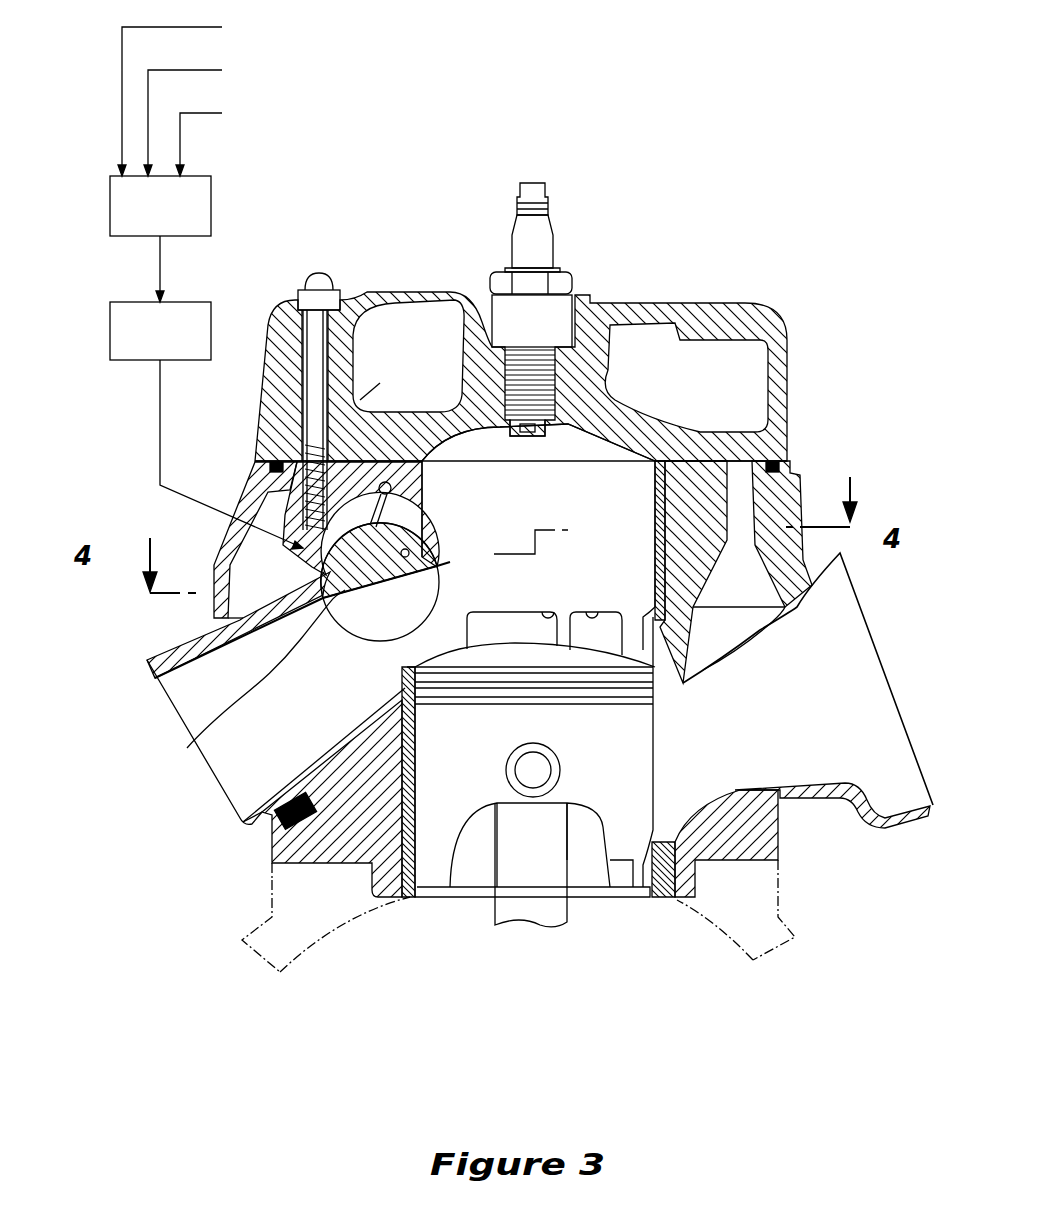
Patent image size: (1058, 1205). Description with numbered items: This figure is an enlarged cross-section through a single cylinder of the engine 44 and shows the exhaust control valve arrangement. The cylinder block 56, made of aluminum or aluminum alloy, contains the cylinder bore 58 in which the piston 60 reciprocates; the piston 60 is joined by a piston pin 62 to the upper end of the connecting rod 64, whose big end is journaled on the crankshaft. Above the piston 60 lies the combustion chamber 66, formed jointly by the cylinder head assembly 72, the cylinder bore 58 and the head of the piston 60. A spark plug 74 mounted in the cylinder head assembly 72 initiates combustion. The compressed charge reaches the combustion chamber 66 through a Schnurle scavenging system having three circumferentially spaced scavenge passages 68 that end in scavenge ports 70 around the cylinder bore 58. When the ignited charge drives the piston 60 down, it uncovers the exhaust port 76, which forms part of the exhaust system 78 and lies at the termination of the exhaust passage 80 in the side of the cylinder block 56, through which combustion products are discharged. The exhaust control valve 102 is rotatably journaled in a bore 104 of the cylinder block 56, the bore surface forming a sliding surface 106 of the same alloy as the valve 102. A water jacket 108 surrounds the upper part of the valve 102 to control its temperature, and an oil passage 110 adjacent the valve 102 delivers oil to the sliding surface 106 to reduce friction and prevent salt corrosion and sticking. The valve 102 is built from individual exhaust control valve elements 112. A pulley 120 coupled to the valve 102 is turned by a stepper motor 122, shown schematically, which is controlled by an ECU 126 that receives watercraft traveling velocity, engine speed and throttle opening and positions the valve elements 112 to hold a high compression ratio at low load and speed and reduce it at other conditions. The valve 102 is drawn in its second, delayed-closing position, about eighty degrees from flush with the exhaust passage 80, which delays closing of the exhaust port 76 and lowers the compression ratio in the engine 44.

The engine 44 is at (806, 262).
The cylinder block 56 is at (777, 503).
The cylinder bore 58 is at (655, 487).
The piston 60 is at (597, 873).
The piston pin 62 is at (545, 770).
The connecting rod 64 is at (493, 910).
The combustion chamber 66 is at (583, 508).
The scavenge passage 68 is at (667, 682).
The scavenge port 70 is at (566, 613).
The cylinder head assembly 72 is at (798, 360).
The spark plug 74 is at (557, 242).
The exhaust port 76 is at (430, 635).
The exhaust system 78 is at (145, 662).
The exhaust passage 80 is at (250, 787).
The exhaust control valve 102 is at (330, 648).
The bore 104 is at (187, 748).
The sliding surface 106 is at (410, 552).
The water jacket 108 is at (396, 372).
The oil passage 110 is at (393, 488).
The exhaust control valve element 112 is at (395, 597).
The pulley 120 is at (312, 620).
The stepper motor 122 is at (110, 328).
The ECU 126 is at (212, 218).